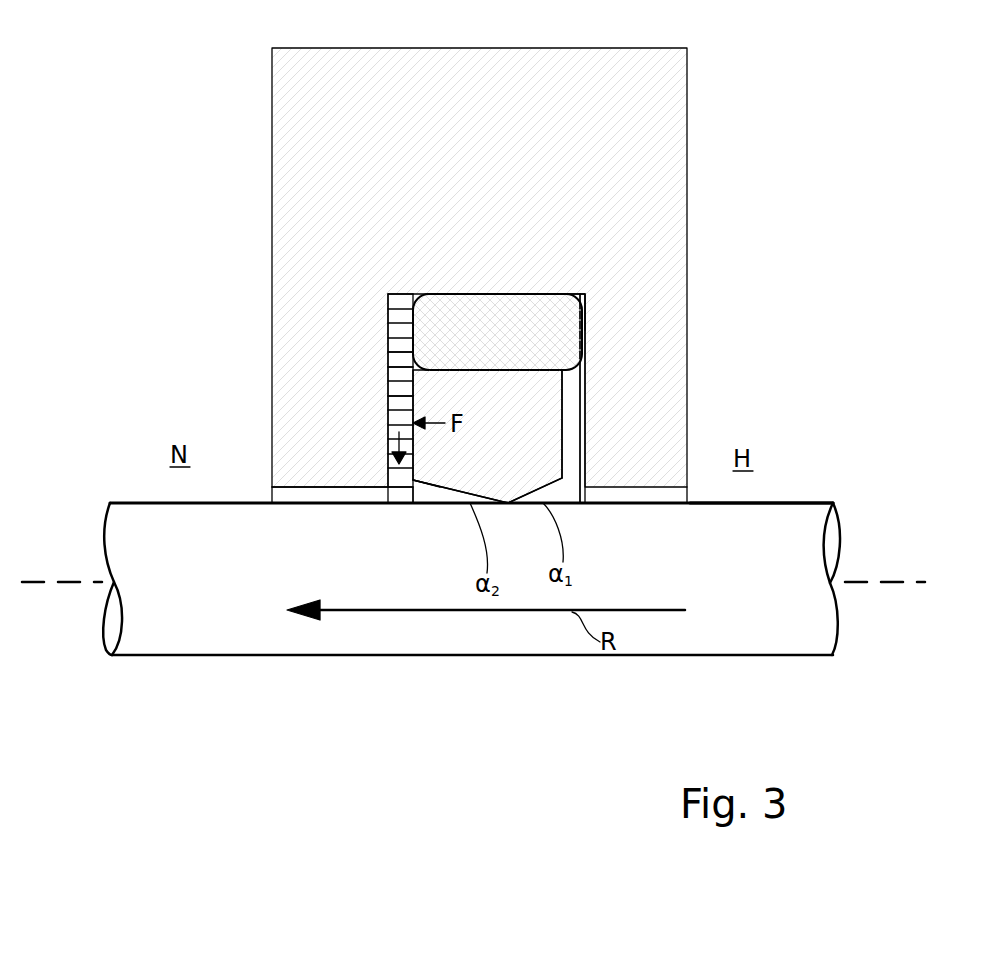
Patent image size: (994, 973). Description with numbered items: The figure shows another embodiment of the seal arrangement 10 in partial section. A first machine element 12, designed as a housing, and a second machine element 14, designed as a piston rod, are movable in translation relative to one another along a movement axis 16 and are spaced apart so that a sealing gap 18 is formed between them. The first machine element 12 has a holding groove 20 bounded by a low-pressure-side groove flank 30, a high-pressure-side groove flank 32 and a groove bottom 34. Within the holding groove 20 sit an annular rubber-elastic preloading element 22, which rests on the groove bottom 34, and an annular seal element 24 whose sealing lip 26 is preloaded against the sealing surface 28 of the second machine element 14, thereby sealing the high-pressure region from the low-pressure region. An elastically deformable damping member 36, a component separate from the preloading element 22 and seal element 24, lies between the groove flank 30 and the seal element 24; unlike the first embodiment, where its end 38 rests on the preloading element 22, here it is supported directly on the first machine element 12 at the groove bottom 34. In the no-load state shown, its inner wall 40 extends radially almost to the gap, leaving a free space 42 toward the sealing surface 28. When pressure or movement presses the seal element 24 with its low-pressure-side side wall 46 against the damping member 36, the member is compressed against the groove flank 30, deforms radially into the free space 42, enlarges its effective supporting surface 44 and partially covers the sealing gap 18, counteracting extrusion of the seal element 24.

The seal arrangement 10 is at (766, 174).
The first machine element 12 is at (499, 197).
The second machine element 14 is at (383, 592).
The movement axis 16 is at (90, 580).
The sealing gap 18 is at (327, 490).
The holding groove 20 is at (572, 403).
The preloading element 22 is at (495, 342).
The seal element 24 is at (526, 441).
The sealing lip 26 is at (512, 490).
The sealing surface 28 is at (733, 503).
The low-pressure-side groove flank 30 is at (398, 293).
The high-pressure-side groove flank 32 is at (587, 494).
The groove bottom 34 is at (586, 296).
The damping member 36 is at (393, 368).
The end of the damping member 38 is at (400, 294).
The inner wall 40 is at (401, 503).
The free space 42 is at (385, 492).
The effective supporting surface 44 is at (390, 399).
The low-pressure-side side wall 46 is at (418, 492).